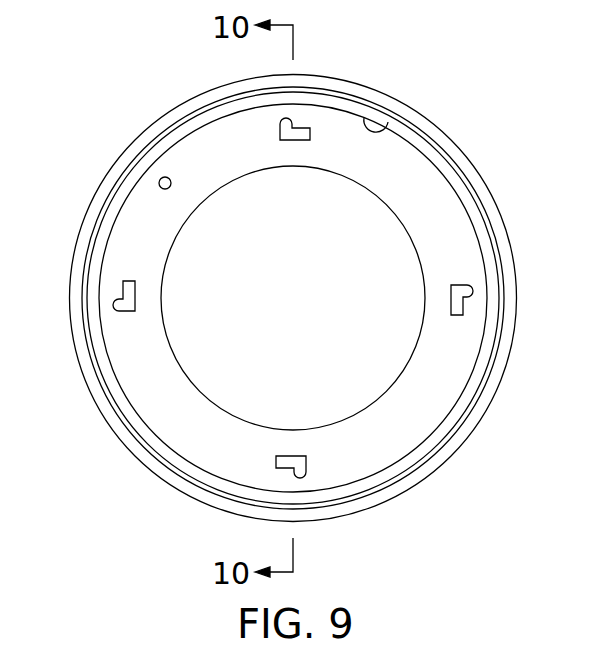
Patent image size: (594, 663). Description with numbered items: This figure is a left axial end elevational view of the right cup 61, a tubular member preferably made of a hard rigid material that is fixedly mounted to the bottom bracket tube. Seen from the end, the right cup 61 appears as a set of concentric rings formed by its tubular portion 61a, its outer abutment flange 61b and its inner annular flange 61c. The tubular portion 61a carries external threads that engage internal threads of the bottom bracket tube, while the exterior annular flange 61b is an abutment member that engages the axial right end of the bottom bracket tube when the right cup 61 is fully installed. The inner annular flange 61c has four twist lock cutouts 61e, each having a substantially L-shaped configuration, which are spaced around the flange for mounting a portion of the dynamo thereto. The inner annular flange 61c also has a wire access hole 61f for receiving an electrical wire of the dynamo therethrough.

The right cup 61 is at (470, 134).
The tubular portion 61a is at (388, 133).
The outer abutment flange 61b is at (432, 472).
The inner annular flange 61c is at (422, 212).
The twist lock cutouts 61e is at (295, 141).
The wire access hole 61f is at (160, 179).